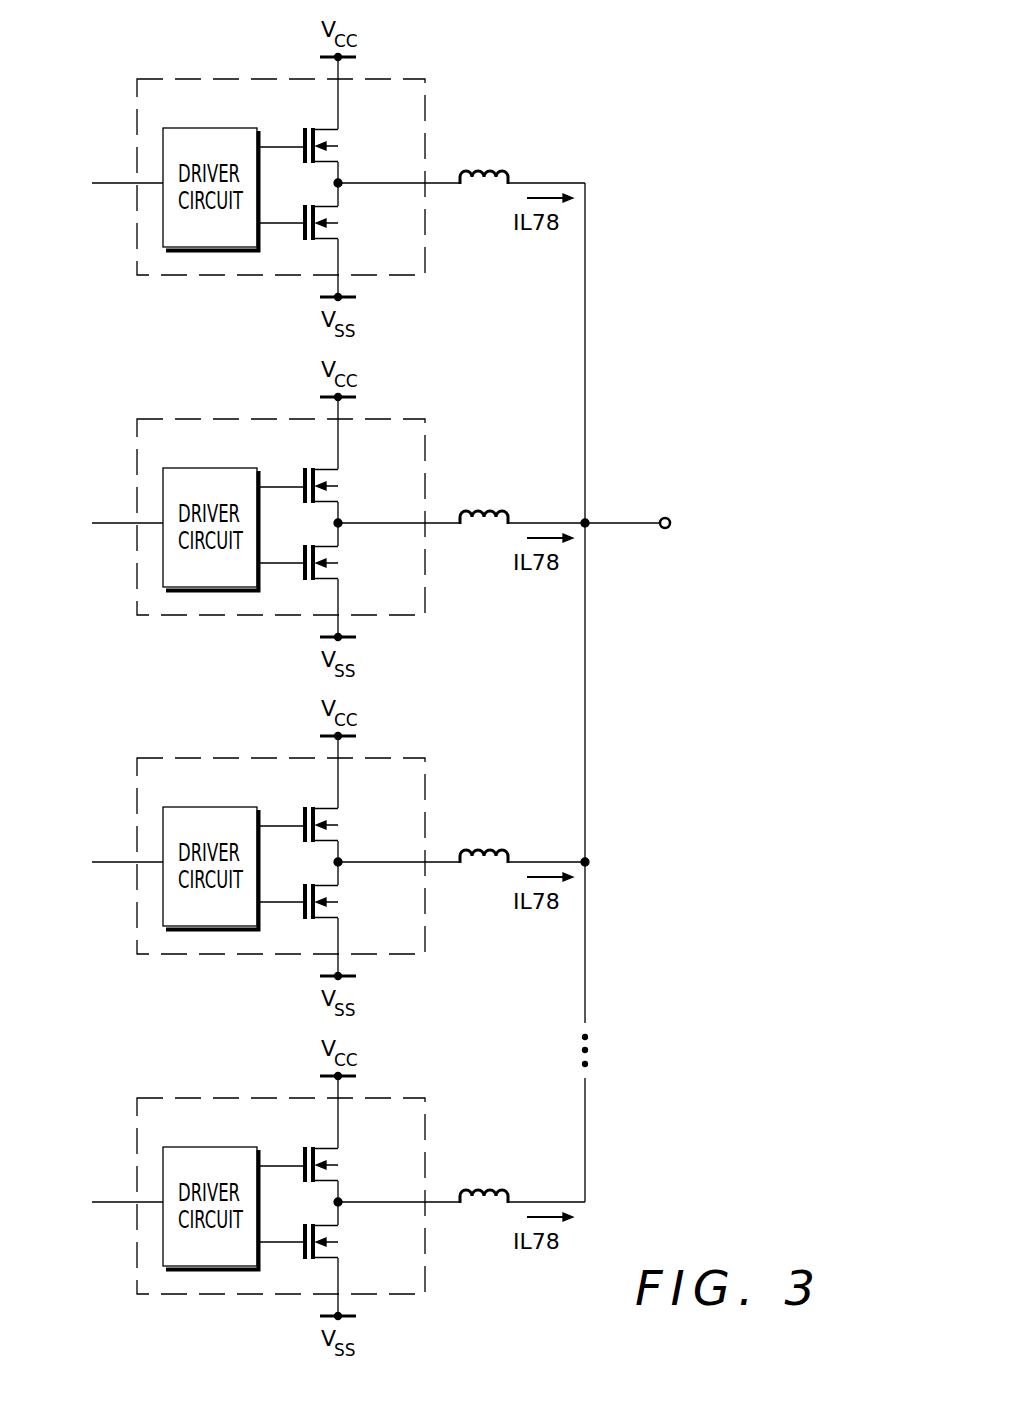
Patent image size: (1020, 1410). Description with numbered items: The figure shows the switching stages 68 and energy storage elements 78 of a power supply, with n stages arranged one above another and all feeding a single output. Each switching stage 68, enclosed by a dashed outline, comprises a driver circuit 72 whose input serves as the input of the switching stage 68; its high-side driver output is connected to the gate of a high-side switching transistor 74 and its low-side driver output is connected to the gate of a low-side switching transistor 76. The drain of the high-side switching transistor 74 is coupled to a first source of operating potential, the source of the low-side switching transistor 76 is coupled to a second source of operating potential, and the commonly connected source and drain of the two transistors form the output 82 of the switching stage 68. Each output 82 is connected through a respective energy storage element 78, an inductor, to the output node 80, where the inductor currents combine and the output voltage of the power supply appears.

The switching stage 68 is at (137, 115).
The driver circuit 72 is at (222, 128).
The high-side switching transistor 74 is at (339, 139).
The low-side switching transistor 76 is at (339, 231).
The energy storage element 78 is at (503, 171).
The output node 80 is at (587, 520).
The output of switching stage 82 is at (355, 183).